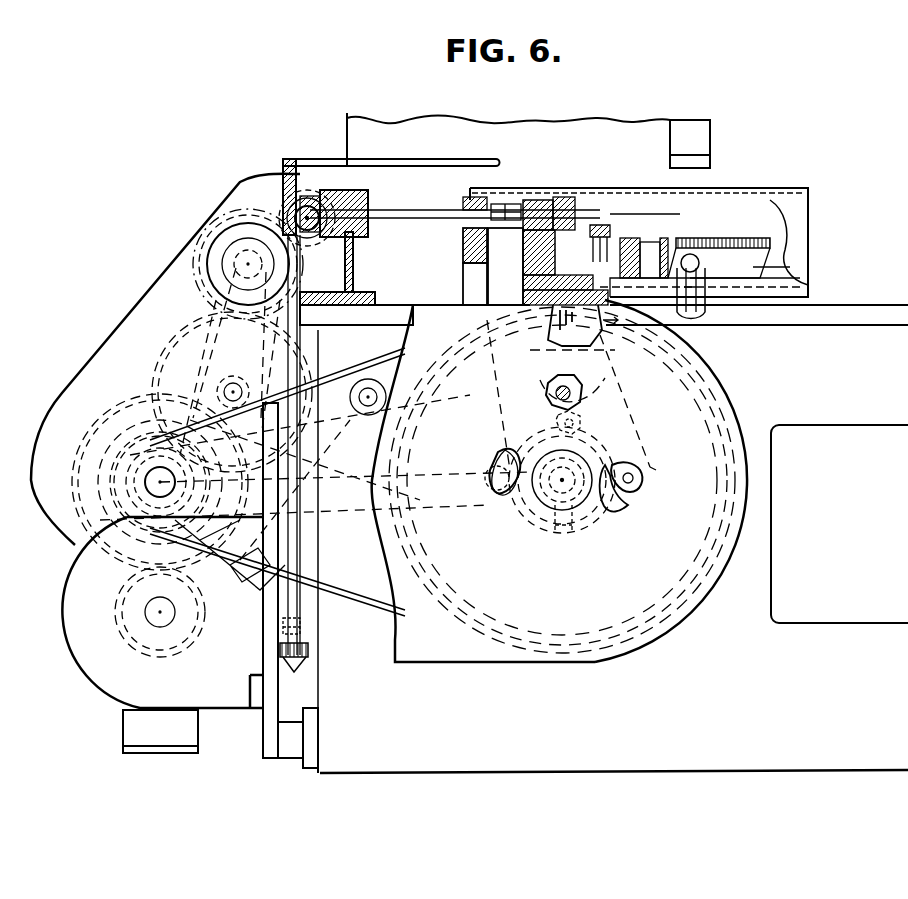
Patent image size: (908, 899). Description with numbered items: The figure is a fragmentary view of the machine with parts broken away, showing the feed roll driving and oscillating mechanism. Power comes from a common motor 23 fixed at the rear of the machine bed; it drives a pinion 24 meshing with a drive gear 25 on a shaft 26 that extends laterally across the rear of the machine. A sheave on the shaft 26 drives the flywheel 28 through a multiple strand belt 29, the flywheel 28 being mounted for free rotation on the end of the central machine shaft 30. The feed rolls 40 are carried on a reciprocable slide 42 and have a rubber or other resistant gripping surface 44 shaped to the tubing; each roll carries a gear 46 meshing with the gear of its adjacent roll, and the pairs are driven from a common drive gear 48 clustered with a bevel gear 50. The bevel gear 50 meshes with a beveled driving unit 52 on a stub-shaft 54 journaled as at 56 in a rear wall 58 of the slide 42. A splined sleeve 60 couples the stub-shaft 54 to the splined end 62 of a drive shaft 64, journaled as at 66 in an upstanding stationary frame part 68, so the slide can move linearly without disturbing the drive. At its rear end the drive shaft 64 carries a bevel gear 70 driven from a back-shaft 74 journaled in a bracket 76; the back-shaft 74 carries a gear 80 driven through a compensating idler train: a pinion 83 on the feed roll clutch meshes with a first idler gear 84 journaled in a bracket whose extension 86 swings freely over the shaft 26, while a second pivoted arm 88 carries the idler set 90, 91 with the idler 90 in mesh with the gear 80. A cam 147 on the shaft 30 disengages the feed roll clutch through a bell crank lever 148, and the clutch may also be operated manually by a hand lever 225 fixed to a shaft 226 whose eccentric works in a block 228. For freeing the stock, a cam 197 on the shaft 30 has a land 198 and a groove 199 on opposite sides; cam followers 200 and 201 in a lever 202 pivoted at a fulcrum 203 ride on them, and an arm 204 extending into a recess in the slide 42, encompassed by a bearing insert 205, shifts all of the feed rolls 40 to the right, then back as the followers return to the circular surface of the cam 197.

The motor 23 is at (200, 688).
The pinion 24 is at (140, 650).
The drive gear 25 is at (92, 522).
The shaft 26 is at (146, 464).
The flywheel 28 is at (608, 618).
The multiple strand belt 29 is at (143, 482).
The central machine shaft 30 is at (552, 532).
The feed rolls 40 is at (680, 234).
The reciprocable slide 42 is at (528, 283).
The gripping surface 44 is at (750, 264).
The gear 46 is at (795, 232).
The common drive gear 48 is at (622, 238).
The bevel gear 50 is at (596, 225).
The beveled driving unit 52 is at (573, 190).
The stub-shaft 54 is at (563, 200).
The journal 56 is at (528, 206).
The rear wall 58 is at (530, 254).
The sleeve 60 is at (498, 200).
The splined end 62 is at (492, 225).
The drive shaft 64 is at (430, 220).
The journal 66 is at (461, 245).
The stationary frame part 68 is at (460, 284).
The bevel gear 70 is at (332, 188).
The back-shaft 74 is at (310, 205).
The bracket 76 is at (354, 278).
The gear 80 is at (276, 210).
The pinion 83 is at (146, 436).
The first idler gear 84 is at (152, 374).
The extension 86 is at (212, 387).
The pivoted arm 88 is at (224, 304).
The idler gear 90 is at (205, 268).
The idler gear 91 is at (246, 214).
The cam 147 is at (570, 502).
The bell crank lever 148 is at (340, 470).
The cam 197 is at (620, 510).
The land 198 is at (490, 460).
The groove 199 is at (638, 486).
The cam follower 200 is at (508, 498).
The cam follower 201 is at (640, 458).
The lever 202 is at (618, 370).
The fulcrum 203 is at (574, 393).
The arm 204 is at (550, 322).
The bearing insert 205 is at (534, 296).
The hand lever 225 is at (431, 162).
The shaft 226 is at (302, 556).
The block 228 is at (312, 664).